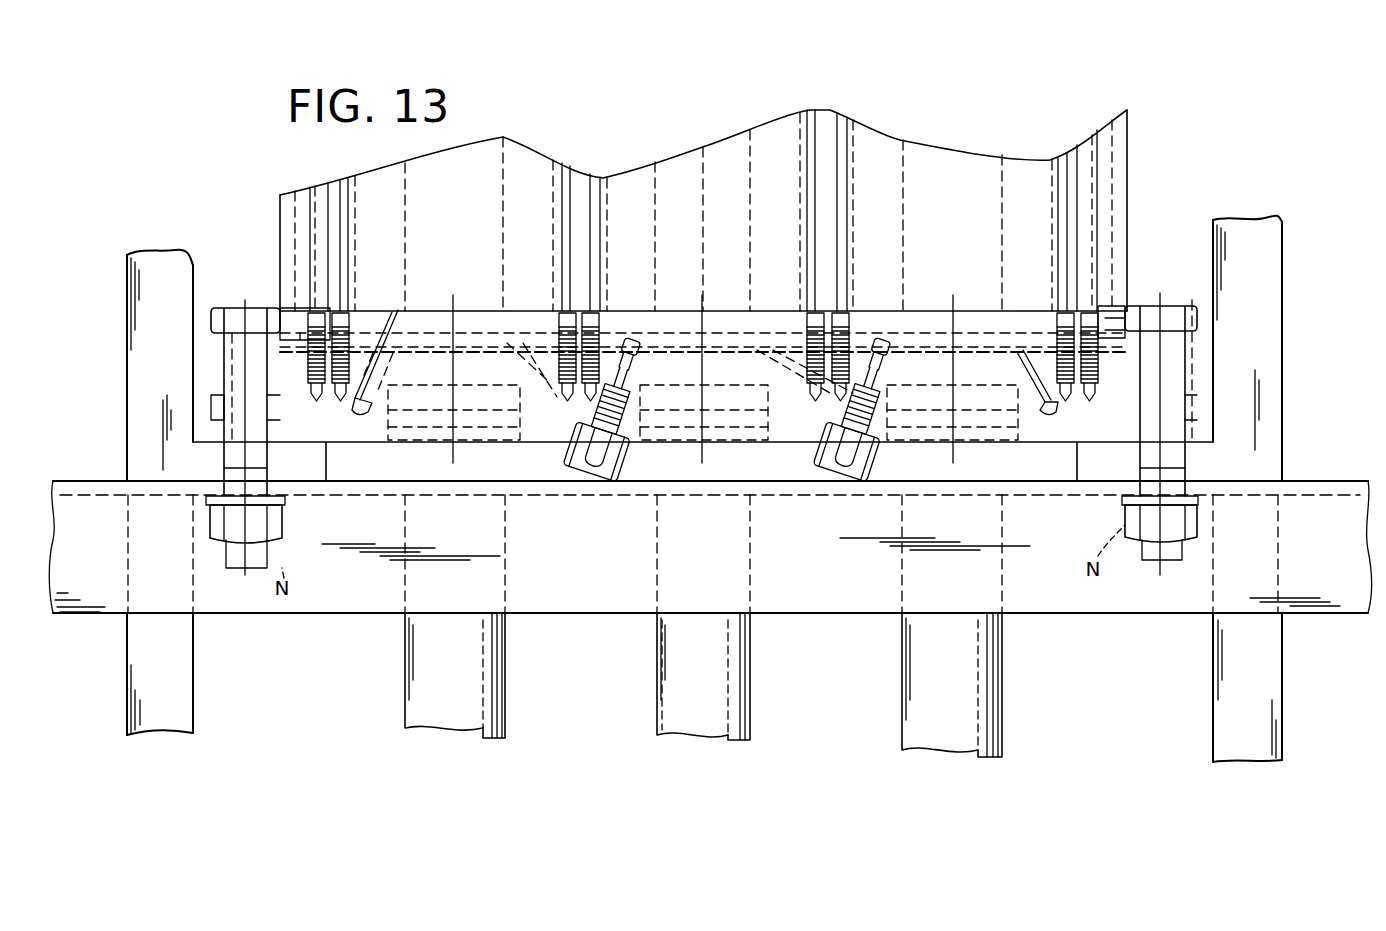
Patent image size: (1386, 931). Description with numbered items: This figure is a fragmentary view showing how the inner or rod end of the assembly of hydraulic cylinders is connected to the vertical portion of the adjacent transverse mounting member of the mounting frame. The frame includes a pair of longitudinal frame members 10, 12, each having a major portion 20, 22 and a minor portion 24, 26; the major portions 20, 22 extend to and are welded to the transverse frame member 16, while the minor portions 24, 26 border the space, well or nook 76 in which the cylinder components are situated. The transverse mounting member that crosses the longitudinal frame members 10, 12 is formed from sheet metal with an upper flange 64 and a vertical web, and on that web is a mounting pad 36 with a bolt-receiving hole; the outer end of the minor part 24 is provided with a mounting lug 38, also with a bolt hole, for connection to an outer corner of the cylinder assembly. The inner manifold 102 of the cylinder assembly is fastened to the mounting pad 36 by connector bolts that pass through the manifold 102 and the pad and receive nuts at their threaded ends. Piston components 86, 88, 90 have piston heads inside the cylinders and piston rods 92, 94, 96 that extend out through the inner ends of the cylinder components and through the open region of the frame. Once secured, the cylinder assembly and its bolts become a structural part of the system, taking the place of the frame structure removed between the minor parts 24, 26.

The longitudinal frame member 10 is at (1211, 489).
The longitudinal frame member 12 is at (166, 536).
The transverse frame member 16 is at (710, 601).
The major portion 20 is at (1227, 663).
The major portion 22 is at (187, 667).
The minor portion 24 is at (1211, 445).
The minor portion 26 is at (166, 492).
The mounting pad 36 is at (322, 462).
The mounting lug 38 is at (1095, 465).
The upper flange 64 is at (342, 603).
The nook 76 is at (232, 272).
The piston component 86 is at (477, 695).
The piston component 88 is at (729, 700).
The piston component 90 is at (977, 703).
The piston rod 92 is at (457, 712).
The piston rod 94 is at (708, 713).
The piston rod 96 is at (955, 717).
The inner manifold 102 is at (550, 418).